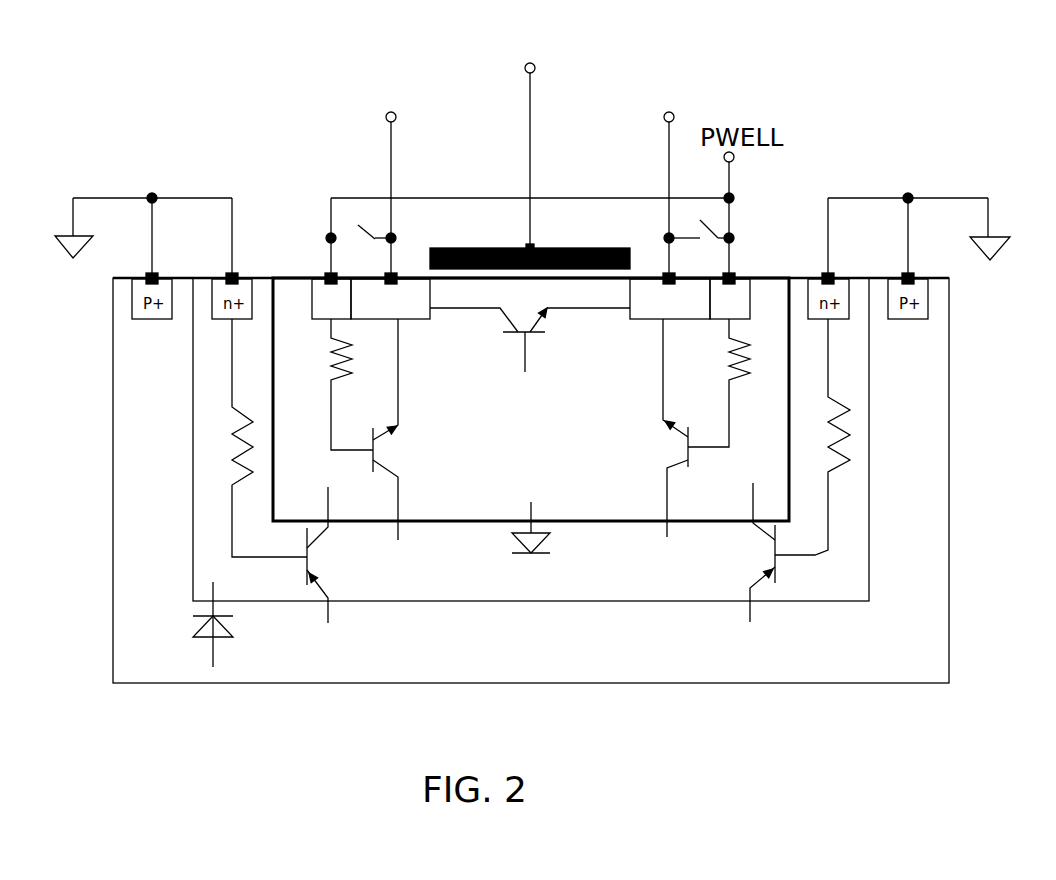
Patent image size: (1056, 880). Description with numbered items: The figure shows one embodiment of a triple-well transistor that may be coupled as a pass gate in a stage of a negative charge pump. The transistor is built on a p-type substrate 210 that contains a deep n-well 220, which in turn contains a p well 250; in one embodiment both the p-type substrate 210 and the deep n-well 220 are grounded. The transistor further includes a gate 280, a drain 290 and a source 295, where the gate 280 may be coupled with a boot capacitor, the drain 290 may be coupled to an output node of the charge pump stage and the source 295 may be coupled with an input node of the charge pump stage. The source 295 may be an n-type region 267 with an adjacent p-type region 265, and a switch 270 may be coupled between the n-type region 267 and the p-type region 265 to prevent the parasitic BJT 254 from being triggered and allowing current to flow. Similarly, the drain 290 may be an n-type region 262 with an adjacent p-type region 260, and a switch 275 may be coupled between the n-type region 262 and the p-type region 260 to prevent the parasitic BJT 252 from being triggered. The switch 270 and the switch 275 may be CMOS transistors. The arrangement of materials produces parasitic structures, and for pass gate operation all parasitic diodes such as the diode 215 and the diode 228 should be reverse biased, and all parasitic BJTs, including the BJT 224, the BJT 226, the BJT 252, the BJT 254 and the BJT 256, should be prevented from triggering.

The p-type substrate 210 is at (922, 517).
The parasitic diode 215 is at (203, 637).
The deep n-well 220 is at (860, 562).
The parasitic BJT 224 is at (773, 582).
The parasitic BJT 226 is at (303, 578).
The parasitic diode 228 is at (540, 555).
The p well 250 is at (531, 399).
The parasitic BJT 252 is at (393, 473).
The parasitic BJT 254 is at (660, 477).
The parasitic BJT 256 is at (520, 358).
The p-type region 260 is at (318, 277).
The n-type region 262 is at (402, 275).
The p-type region 265 is at (740, 273).
The n-type region 267 is at (650, 277).
The switch 270 is at (728, 230).
The switch 275 is at (330, 233).
The gate 280 is at (530, 150).
The drain 290 is at (395, 178).
The source 295 is at (666, 178).